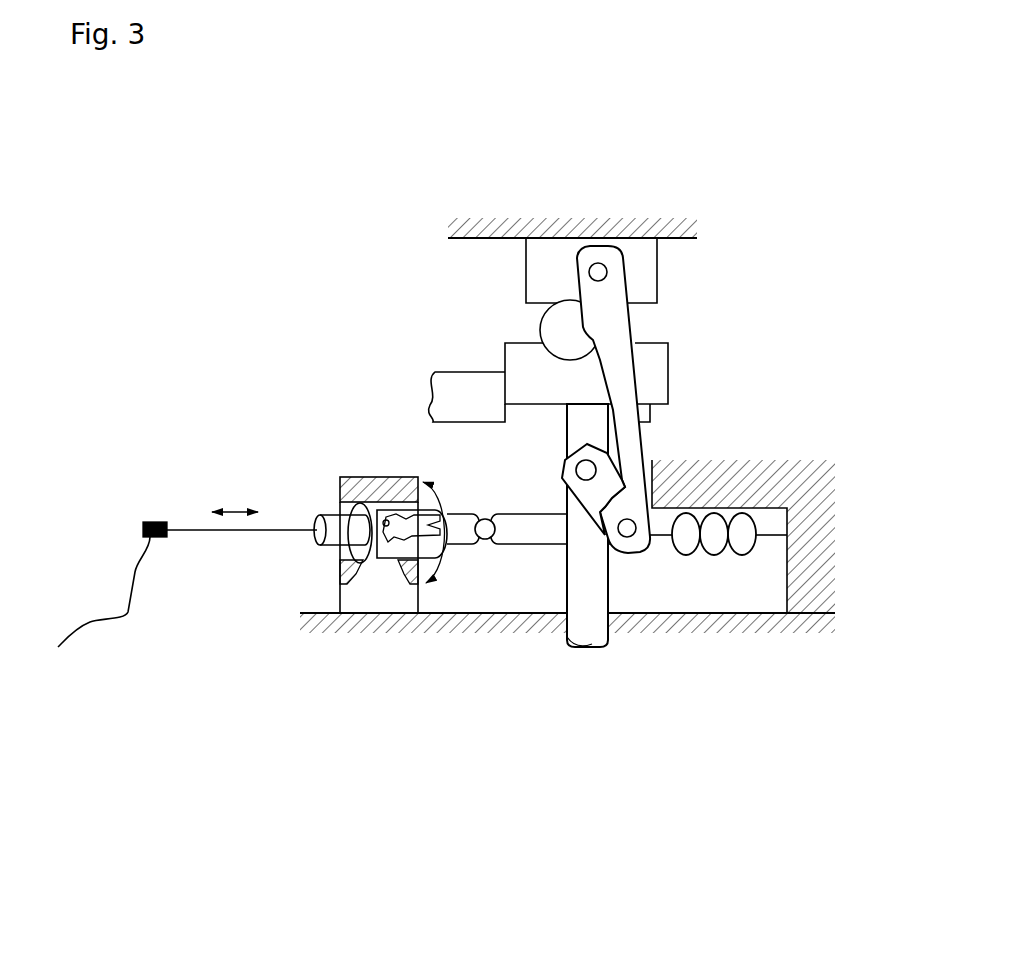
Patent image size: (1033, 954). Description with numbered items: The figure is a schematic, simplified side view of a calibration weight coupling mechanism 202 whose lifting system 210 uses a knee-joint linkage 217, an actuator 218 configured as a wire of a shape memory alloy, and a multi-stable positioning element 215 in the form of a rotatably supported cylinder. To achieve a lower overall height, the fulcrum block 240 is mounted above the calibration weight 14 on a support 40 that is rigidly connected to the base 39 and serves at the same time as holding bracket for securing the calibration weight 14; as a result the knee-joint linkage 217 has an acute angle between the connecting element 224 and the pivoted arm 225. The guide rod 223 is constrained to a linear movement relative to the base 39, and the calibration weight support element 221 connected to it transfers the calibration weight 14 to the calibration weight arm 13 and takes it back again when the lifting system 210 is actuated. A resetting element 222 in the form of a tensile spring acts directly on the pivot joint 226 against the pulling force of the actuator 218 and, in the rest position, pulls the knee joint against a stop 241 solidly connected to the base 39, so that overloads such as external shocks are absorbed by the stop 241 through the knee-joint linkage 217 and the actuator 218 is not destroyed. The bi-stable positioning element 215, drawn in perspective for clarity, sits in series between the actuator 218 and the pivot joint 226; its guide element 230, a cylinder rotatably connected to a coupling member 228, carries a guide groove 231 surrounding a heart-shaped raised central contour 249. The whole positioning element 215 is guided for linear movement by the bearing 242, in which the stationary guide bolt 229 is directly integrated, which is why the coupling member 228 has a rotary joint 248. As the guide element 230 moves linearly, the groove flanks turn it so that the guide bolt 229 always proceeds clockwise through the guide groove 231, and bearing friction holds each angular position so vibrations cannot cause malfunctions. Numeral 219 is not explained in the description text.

The calibration weight arm 13 is at (473, 387).
The calibration weight 14 is at (563, 333).
The support 40 is at (618, 217).
The calibration weight coupling mechanism 202 is at (307, 283).
The lifting system 210 is at (745, 342).
The multi-stable positioning element 215 is at (315, 592).
The knee-joint linkage 217 is at (638, 563).
The actuator 218 is at (190, 535).
The cable 219 is at (137, 570).
The calibration weight support element 221 is at (648, 368).
The resetting element 222 is at (727, 555).
The guide rod 223 is at (585, 583).
The connecting element 224 is at (603, 480).
The pivoted arm 225 is at (622, 387).
The pivot joint 226 is at (633, 533).
The coupling member 228 is at (528, 528).
The guide bolt 229 is at (388, 527).
The guide element 230 is at (370, 507).
The guide groove 231 is at (386, 522).
The base 39 is at (723, 652).
The fulcrum block 240 is at (555, 263).
The stop 241 is at (672, 487).
The bearing 242 is at (397, 597).
The rotary joint 248 is at (483, 541).
The central contour 249 is at (393, 510).